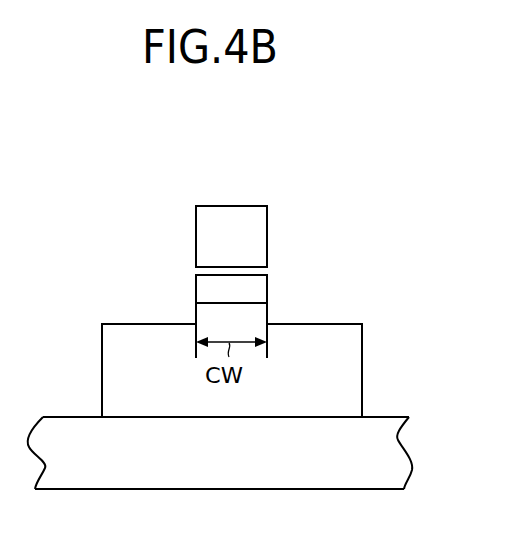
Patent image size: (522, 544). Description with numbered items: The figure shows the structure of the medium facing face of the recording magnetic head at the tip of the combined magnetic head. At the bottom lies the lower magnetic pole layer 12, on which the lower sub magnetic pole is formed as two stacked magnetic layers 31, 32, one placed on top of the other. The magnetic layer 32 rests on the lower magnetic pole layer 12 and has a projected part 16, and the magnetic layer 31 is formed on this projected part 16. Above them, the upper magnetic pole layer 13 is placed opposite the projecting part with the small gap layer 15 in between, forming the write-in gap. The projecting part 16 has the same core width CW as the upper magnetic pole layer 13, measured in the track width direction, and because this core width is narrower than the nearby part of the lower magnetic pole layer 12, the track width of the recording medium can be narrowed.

The lower magnetic pole layer 12 is at (117, 478).
The upper magnetic pole layer 13 is at (196, 225).
The gap layer 15 is at (270, 272).
The projected part 16 is at (240, 316).
The magnetic layer 31 is at (196, 290).
The magnetic layer 32 is at (102, 342).